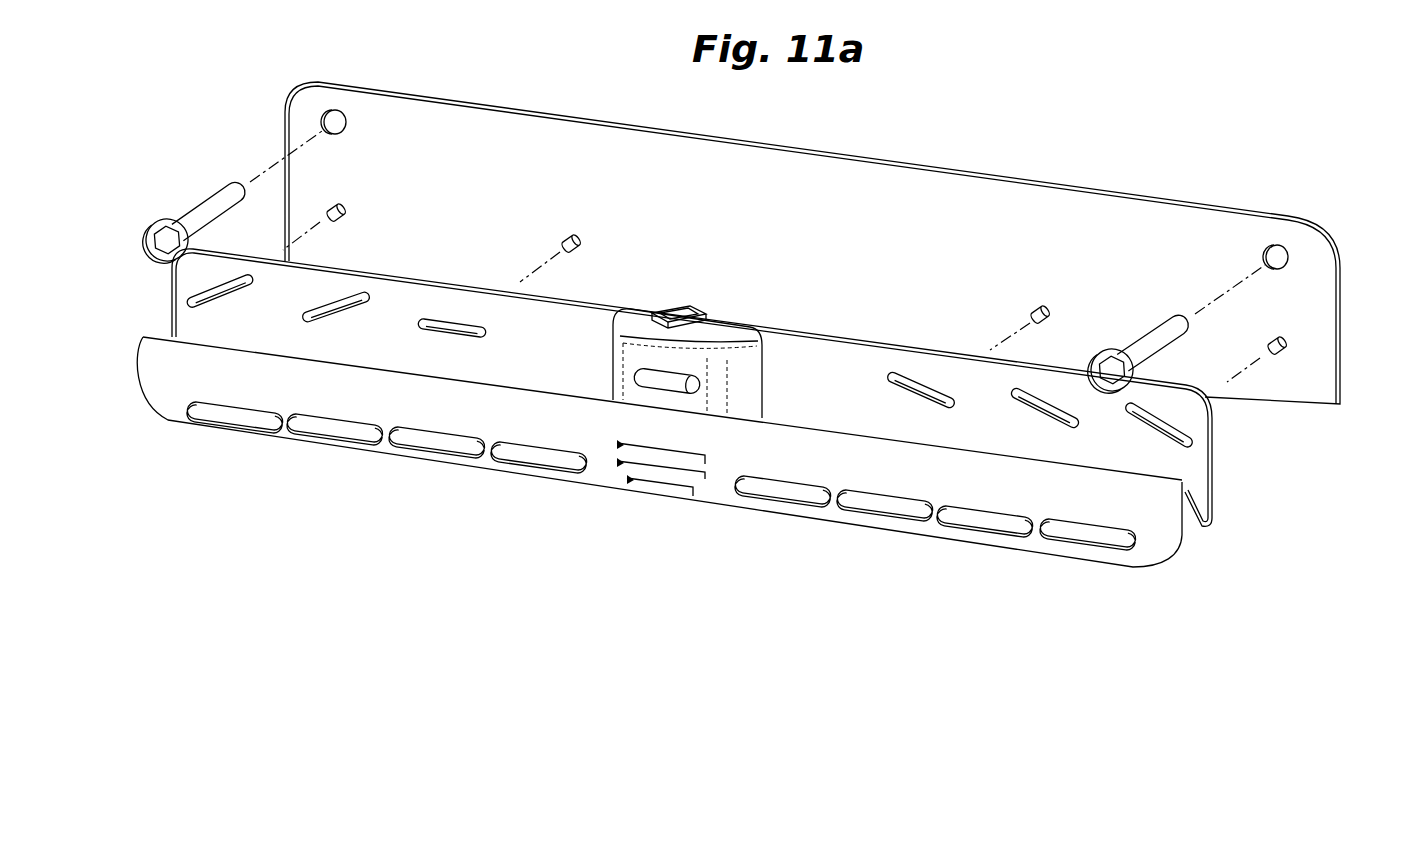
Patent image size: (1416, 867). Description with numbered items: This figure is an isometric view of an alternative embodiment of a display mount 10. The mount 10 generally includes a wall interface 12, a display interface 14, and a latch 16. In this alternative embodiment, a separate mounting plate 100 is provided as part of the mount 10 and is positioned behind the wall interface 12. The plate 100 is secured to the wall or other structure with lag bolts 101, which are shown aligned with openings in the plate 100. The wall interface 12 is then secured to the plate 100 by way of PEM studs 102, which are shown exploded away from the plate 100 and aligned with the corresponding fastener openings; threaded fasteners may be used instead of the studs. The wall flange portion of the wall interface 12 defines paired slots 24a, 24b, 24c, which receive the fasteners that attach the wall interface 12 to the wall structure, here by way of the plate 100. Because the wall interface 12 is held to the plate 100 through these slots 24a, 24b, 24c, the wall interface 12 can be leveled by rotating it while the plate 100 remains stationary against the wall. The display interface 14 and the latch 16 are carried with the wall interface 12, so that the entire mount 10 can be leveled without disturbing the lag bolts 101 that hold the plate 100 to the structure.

The mount 10 is at (222, 103).
The wall interface 12 is at (1215, 494).
The display interface 14 is at (723, 503).
The latch 16 is at (758, 352).
The paired slots 24a is at (195, 289).
The paired slots 24b is at (305, 318).
The paired slots 24c is at (457, 337).
The mounting plate 100 is at (855, 152).
The lag bolts 101 is at (210, 205).
The PEM studs 102 is at (570, 228).